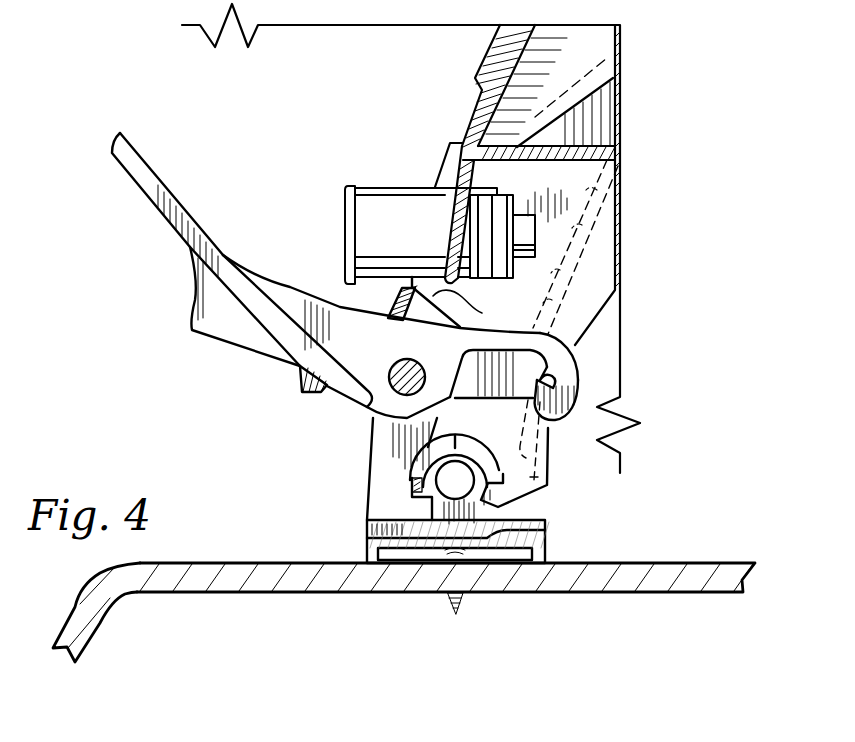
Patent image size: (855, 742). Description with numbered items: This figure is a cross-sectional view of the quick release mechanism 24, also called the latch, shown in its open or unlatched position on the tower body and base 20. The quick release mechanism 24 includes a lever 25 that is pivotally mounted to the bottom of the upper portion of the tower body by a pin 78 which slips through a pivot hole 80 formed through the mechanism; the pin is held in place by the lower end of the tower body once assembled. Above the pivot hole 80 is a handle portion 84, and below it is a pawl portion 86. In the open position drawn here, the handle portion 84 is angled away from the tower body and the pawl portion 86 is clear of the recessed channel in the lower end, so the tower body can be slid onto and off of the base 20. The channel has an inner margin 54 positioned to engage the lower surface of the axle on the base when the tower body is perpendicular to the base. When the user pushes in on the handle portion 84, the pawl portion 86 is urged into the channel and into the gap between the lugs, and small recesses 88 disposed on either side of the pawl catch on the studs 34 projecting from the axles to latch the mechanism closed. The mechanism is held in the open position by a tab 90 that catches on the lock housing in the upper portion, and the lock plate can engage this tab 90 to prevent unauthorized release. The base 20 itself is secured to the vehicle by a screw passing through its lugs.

The base 20 is at (553, 526).
The quick release mechanism 24 is at (254, 262).
The lever 25 is at (297, 288).
The stud 34 is at (453, 481).
The inner margin 54 is at (500, 478).
The pin 78 is at (414, 359).
The pivot hole 80 is at (393, 389).
The handle portion 84 is at (132, 180).
The pawl portion 86 is at (578, 400).
The recesses 88 is at (552, 373).
The tab 90 is at (477, 312).